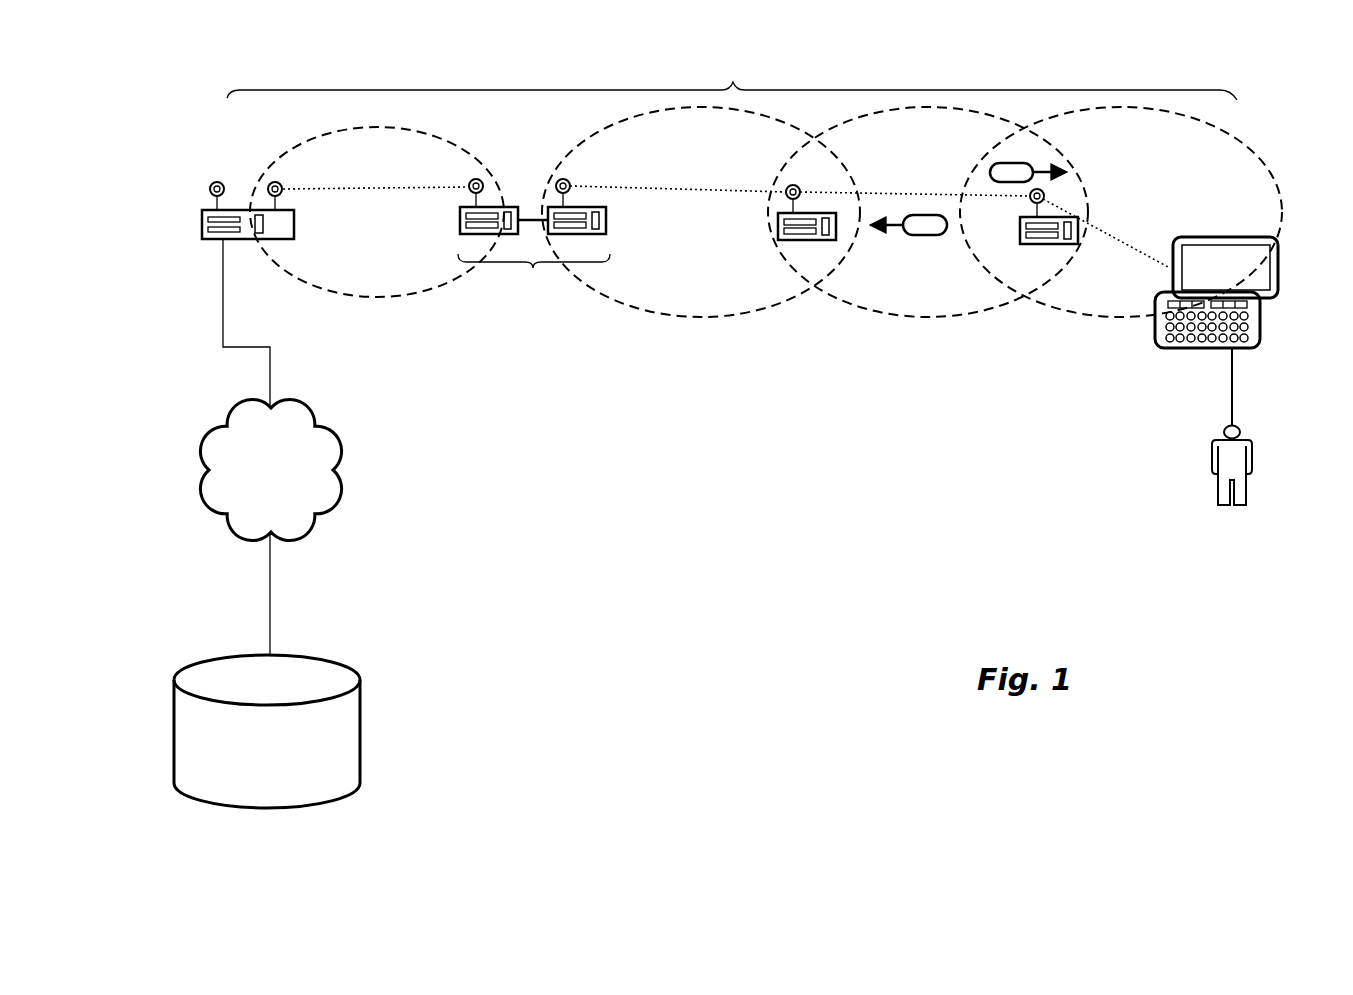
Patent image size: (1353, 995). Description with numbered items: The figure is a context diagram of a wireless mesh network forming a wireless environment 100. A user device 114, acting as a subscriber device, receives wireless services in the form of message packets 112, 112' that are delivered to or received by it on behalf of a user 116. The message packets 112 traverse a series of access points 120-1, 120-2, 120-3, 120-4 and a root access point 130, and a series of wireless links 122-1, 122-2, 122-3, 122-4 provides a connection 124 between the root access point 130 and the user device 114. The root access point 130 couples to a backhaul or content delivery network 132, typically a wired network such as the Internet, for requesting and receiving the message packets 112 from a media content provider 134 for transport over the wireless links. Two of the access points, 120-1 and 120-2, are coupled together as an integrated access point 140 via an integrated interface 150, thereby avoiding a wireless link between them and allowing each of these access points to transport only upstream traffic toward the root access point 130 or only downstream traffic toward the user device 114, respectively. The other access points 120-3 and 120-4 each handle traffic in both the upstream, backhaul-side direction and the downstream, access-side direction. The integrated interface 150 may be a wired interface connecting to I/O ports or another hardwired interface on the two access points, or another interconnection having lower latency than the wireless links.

The wireless environment 100 is at (648, 510).
The message packets 112 is at (914, 254).
The message packets 112' is at (994, 158).
The user device 114 is at (1155, 345).
The user 116 is at (1210, 458).
The access point 120-1 is at (462, 225).
The access point 120-2 is at (607, 225).
The access point 120-3 is at (835, 240).
The access point 120-4 is at (1020, 244).
The wireless link 122-1 is at (388, 190).
The wireless link 122-2 is at (693, 193).
The wireless link 122-3 is at (893, 195).
The wireless link 122-4 is at (1125, 240).
The connection 124 is at (733, 82).
The root access point 130 is at (215, 240).
The content delivery network 132 is at (322, 422).
The media content provider 134 is at (360, 703).
The integrated access point 140 is at (533, 268).
The integrated interface 150 is at (532, 215).